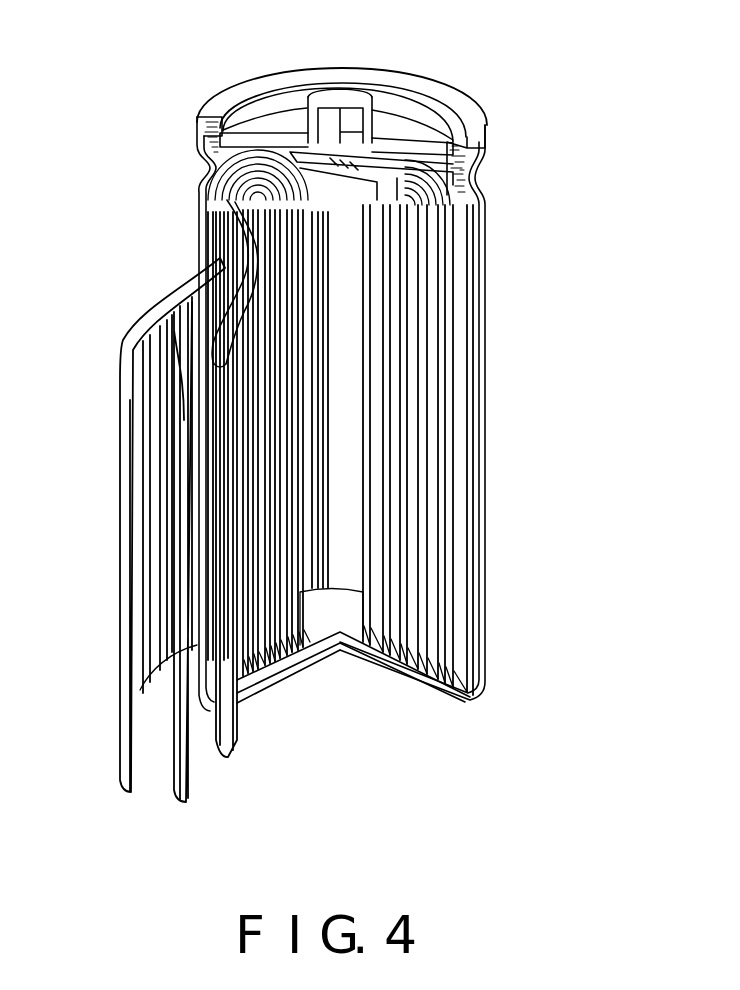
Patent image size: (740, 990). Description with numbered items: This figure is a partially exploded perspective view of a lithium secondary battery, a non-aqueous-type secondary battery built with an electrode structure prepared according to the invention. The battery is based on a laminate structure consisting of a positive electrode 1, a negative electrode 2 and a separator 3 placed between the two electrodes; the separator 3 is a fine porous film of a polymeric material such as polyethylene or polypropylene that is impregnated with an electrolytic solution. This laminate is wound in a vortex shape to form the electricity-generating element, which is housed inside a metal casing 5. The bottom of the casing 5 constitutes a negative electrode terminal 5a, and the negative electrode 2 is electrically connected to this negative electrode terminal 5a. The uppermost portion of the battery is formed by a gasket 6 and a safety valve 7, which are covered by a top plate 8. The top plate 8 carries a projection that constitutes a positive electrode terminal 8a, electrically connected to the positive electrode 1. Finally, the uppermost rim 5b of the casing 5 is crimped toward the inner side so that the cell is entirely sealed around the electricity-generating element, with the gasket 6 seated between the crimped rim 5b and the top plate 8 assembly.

The positive electrode 1 is at (228, 733).
The negative electrode 2 is at (133, 461).
The separator 3 is at (188, 782).
The metal casing 5 is at (480, 515).
The negative electrode terminal 5a is at (267, 688).
The uppermost rim 5b is at (473, 128).
The gasket 6 is at (203, 138).
The safety valve 7 is at (330, 116).
The top plate 8 is at (410, 135).
The positive electrode terminal 8a is at (350, 95).